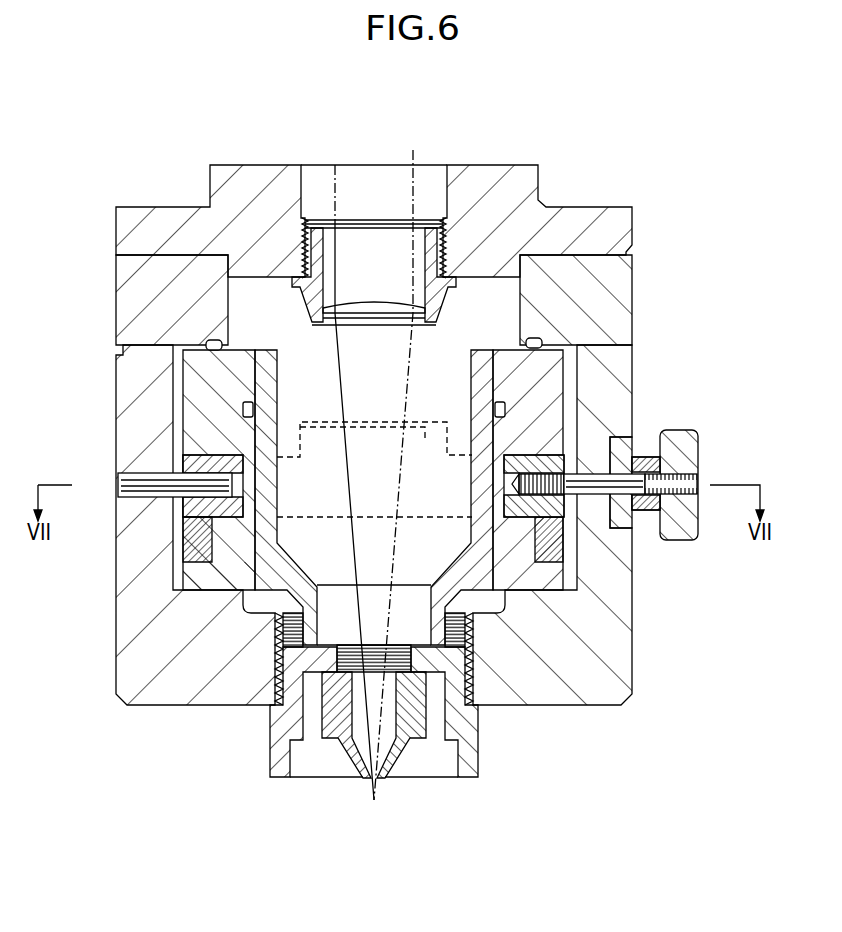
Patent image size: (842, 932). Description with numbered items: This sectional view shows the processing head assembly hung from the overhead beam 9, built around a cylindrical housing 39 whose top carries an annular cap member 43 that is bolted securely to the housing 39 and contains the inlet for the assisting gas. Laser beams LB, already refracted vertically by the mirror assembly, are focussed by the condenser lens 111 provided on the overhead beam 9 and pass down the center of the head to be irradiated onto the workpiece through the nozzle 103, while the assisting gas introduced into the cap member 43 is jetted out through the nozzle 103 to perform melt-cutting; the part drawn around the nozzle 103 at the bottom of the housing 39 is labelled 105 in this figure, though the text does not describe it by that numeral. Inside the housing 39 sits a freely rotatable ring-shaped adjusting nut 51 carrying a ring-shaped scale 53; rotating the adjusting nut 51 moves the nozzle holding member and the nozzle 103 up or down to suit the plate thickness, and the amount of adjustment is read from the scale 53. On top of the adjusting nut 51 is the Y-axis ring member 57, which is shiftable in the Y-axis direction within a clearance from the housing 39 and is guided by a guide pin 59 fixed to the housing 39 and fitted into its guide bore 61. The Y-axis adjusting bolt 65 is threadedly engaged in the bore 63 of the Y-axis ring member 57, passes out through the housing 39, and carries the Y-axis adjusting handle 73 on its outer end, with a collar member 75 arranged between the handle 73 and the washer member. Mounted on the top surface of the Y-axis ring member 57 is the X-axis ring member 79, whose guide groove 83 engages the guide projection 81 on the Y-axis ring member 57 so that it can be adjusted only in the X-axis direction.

The overhead beam 9 is at (598, 213).
The cap member 43 is at (620, 272).
The X-axis ring member 79 is at (555, 395).
The collar member 75 is at (653, 456).
The Y-axis adjusting handle 73 is at (692, 432).
The condenser lens 111 is at (383, 302).
The guide groove 83 is at (322, 420).
The guide projection 81 is at (369, 448).
The bore 63 is at (515, 484).
The Y-axis adjusting bolt 65 is at (508, 506).
The Y-axis ring member 57 is at (186, 462).
The guide pin 59 is at (128, 476).
The guide bore 61 is at (236, 484).
The scale 53 is at (197, 546).
The adjusting nut 51 is at (192, 582).
The housing 39 is at (162, 708).
The nozzle 103 is at (405, 763).
The nozzle holder 105 is at (478, 773).
The laser beams LB is at (413, 169).